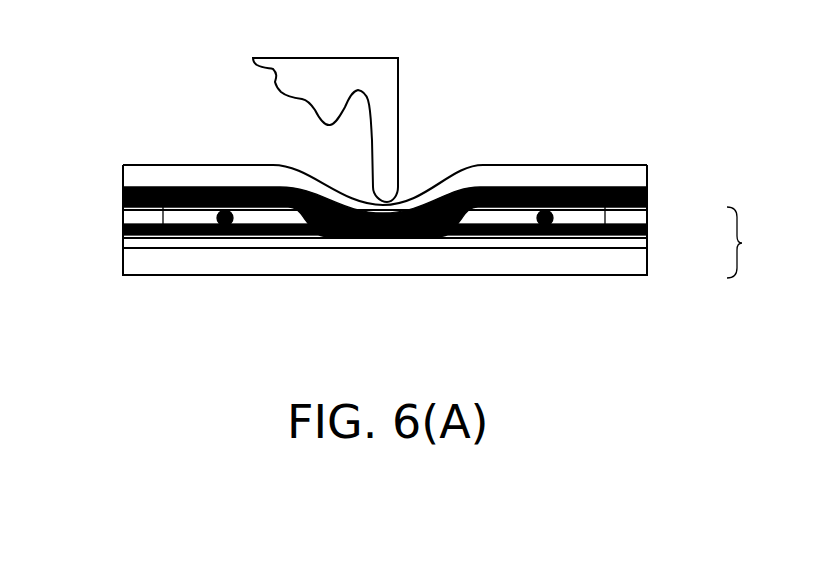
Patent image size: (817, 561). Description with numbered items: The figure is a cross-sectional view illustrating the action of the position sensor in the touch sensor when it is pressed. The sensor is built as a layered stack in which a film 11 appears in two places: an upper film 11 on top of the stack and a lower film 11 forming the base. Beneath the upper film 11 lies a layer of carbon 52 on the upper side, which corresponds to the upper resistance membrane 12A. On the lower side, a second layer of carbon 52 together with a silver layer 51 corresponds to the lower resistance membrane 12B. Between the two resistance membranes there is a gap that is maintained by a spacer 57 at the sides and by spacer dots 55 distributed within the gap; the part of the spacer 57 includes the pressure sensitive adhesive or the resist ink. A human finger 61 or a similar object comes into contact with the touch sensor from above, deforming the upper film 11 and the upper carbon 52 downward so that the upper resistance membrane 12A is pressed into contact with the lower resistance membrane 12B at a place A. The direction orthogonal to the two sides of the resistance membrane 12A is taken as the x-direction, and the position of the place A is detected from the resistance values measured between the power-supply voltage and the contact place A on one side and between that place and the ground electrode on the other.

The film 11 is at (133, 177).
The resistance membrane 12A is at (647, 196).
The resistance membrane 12B is at (761, 242).
The silver layer 51 is at (635, 240).
The carbon 52 is at (635, 232).
The spacer dots 55 is at (222, 219).
The spacer 57 is at (135, 220).
The human finger 61 is at (385, 90).
The place in contact A is at (400, 198).